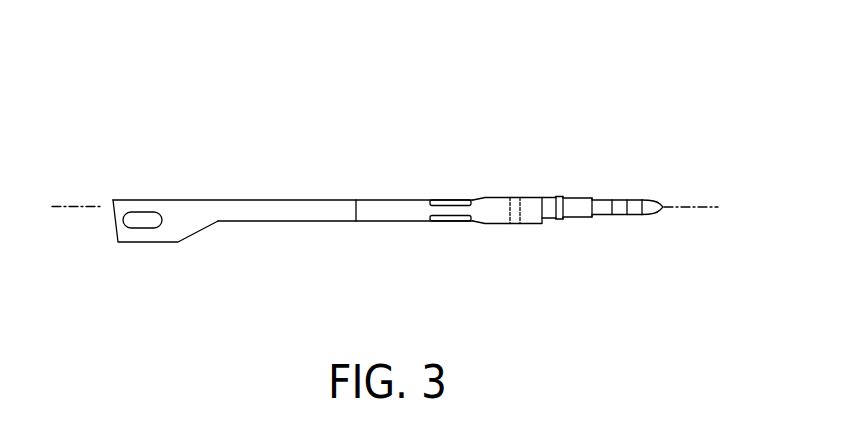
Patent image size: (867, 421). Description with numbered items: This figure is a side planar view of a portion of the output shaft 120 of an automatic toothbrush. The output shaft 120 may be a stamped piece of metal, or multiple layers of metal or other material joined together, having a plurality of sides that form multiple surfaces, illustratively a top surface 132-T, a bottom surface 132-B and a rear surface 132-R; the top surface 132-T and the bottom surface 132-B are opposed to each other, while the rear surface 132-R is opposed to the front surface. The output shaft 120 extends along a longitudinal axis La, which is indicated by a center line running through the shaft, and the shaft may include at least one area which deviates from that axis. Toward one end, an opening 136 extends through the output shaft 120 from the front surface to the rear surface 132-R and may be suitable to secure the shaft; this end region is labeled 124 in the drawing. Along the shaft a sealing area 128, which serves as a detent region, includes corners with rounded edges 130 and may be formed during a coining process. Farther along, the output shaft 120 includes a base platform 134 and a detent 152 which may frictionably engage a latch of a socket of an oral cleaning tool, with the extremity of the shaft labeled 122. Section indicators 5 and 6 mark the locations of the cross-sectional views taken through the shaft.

The output shaft 120 is at (98, 95).
The distal tip 122 is at (664, 209).
The proximal end portion 124 is at (112, 222).
The sealing area 128 is at (473, 180).
The rounded edges 130 is at (465, 200).
The bottom surface 132-B is at (233, 200).
The top surface 132-T is at (233, 222).
The rear surface 132-R is at (293, 210).
The base platform 134 is at (543, 223).
The opening 136 is at (143, 212).
The detent 152 is at (630, 198).
The longitudinal axis La is at (78, 206).
The section line 5- 5 is at (434, 300).
The section line 6- 6 is at (374, 300).